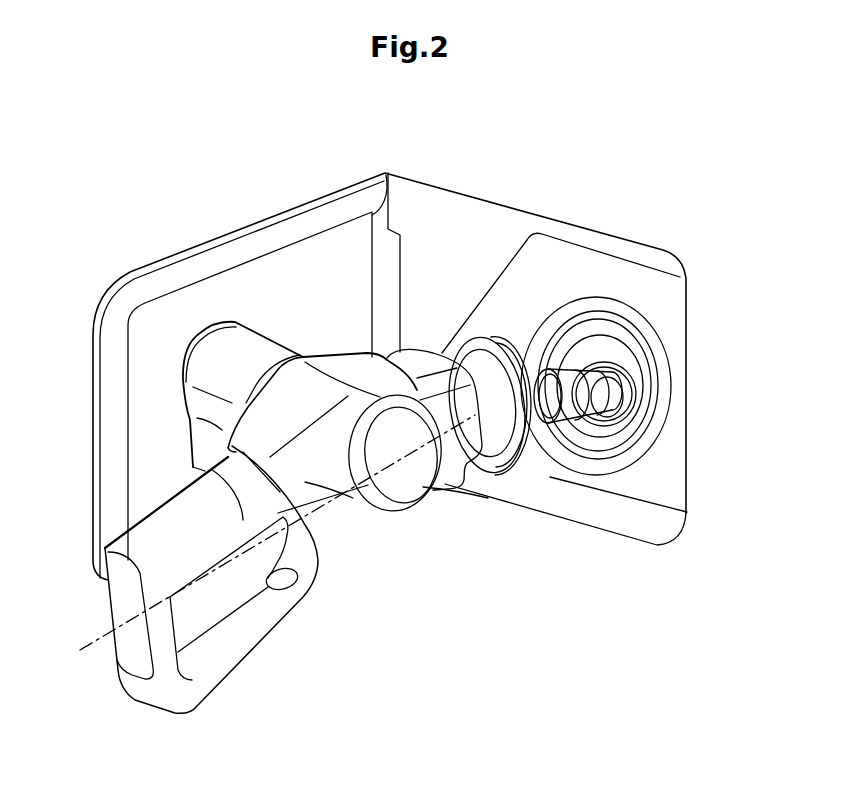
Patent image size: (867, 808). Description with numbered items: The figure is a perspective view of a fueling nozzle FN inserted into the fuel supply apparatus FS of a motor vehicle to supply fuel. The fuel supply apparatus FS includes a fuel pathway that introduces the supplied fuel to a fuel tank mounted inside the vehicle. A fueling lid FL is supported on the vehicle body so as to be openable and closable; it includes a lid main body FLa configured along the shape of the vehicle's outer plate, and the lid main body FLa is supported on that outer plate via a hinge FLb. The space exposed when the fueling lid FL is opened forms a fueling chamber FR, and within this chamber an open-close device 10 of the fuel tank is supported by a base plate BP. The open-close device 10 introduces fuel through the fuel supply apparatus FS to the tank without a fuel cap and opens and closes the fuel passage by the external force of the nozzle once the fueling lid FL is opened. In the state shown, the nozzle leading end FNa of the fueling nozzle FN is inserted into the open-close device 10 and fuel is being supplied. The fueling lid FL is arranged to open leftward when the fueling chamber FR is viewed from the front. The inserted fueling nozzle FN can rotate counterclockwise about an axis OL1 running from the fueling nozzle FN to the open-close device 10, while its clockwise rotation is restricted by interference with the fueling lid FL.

The open-close device of the fuel tank 10 is at (655, 312).
The fueling lid FL is at (223, 238).
The lid main body FLa is at (190, 315).
The hinge FLb is at (383, 250).
The base plate BP is at (580, 258).
The fueling nozzle FN is at (340, 540).
The nozzle leading end FNa is at (577, 423).
The fueling chamber FR is at (630, 462).
The fuel supply apparatus FS is at (597, 453).
The axis OL1 is at (257, 545).